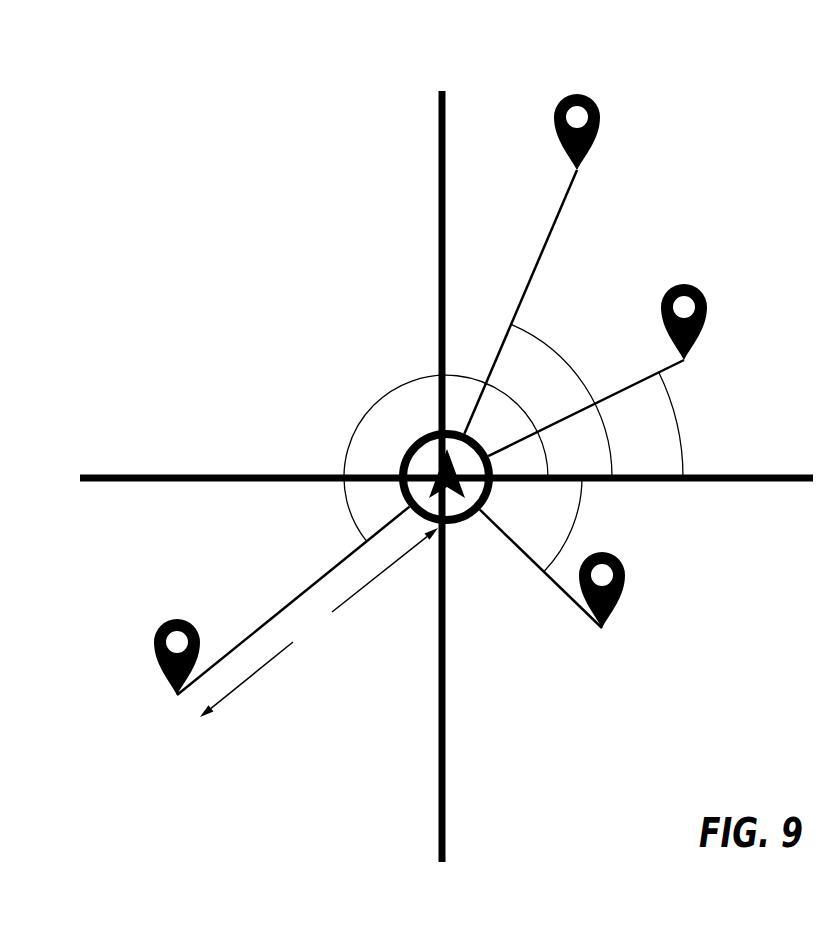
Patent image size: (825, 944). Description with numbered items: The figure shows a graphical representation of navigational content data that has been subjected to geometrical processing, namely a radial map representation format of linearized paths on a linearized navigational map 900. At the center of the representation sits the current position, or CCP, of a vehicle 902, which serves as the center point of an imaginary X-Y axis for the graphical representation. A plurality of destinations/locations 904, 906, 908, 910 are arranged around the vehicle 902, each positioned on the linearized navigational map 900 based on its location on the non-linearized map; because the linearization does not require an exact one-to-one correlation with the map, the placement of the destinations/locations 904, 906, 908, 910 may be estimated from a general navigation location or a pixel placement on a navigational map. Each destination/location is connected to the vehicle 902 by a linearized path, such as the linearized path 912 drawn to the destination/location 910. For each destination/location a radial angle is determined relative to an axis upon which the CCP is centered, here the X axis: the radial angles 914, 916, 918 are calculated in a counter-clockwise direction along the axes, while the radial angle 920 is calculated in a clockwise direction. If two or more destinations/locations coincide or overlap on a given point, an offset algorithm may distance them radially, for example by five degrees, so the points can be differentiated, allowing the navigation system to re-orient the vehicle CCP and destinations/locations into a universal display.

The linearized navigational map 900 is at (112, 156).
The vehicle 902 is at (463, 522).
The destination/location 904 is at (588, 97).
The destination/location 906 is at (688, 285).
The destination/location 908 is at (618, 600).
The destination/location 910 is at (154, 640).
The linearized path 912 is at (319, 622).
The radial angle 914 is at (561, 400).
The radial angle 916 is at (689, 424).
The radial angle 918 is at (443, 452).
The radial angle 920 is at (582, 524).